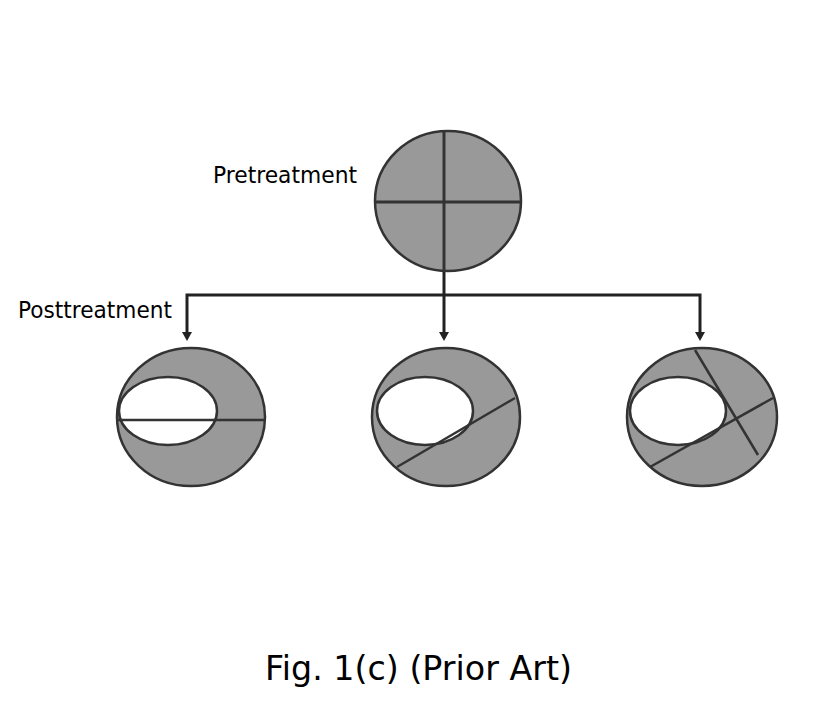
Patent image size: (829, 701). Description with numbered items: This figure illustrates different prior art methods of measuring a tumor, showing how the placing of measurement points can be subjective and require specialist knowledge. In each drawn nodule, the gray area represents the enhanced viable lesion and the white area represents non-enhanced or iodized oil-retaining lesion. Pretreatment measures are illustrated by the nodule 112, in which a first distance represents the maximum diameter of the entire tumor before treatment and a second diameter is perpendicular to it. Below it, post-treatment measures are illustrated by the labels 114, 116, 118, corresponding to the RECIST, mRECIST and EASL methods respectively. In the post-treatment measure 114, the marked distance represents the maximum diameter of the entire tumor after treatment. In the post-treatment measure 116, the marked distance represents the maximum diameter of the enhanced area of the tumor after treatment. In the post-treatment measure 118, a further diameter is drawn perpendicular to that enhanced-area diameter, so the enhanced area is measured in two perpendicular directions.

The nodule 112 is at (483, 140).
The post-treatment measure 114 is at (132, 460).
The post-treatment measure 116 is at (392, 460).
The post-treatment measure 118 is at (647, 460).